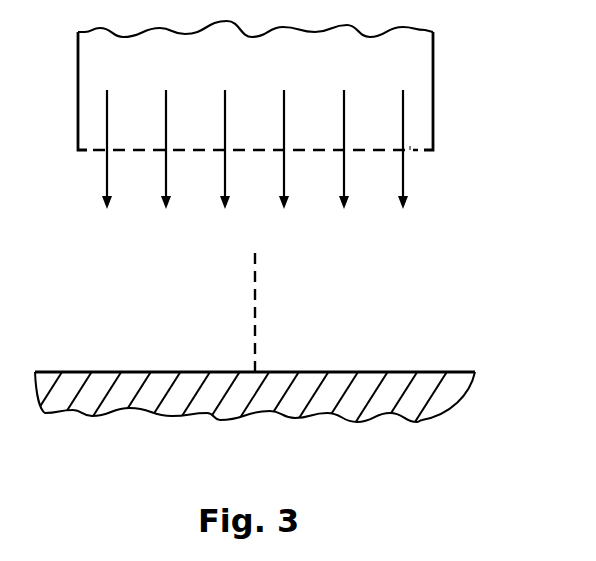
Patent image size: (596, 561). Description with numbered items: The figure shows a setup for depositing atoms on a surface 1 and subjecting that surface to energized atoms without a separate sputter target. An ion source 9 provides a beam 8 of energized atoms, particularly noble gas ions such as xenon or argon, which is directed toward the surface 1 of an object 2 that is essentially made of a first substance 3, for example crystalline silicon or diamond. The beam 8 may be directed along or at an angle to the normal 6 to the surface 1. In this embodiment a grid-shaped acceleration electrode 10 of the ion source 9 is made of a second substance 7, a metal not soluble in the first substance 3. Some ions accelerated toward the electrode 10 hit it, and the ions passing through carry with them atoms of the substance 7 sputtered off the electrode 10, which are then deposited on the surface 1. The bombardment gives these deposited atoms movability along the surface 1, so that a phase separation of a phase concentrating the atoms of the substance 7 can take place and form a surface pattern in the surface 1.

The surface 1 is at (294, 351).
The object 2 is at (458, 383).
The first substance 3 is at (367, 380).
The normal 6 is at (257, 312).
The second substance 7 is at (410, 148).
The beam 8 is at (426, 166).
The ion source 9 is at (440, 77).
The acceleration electrode 10 is at (102, 150).